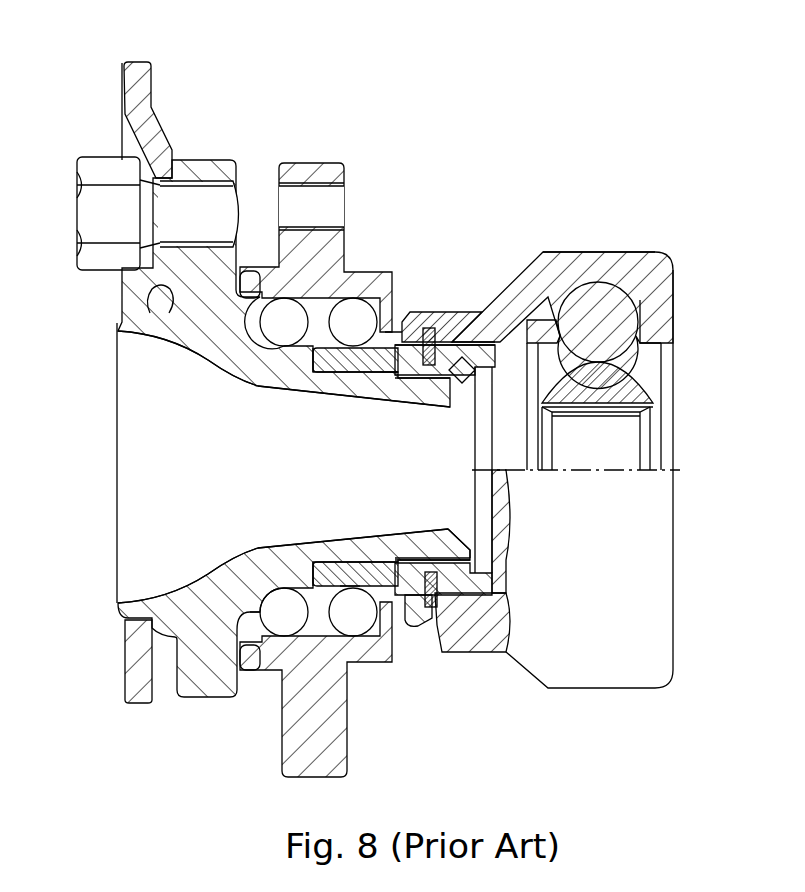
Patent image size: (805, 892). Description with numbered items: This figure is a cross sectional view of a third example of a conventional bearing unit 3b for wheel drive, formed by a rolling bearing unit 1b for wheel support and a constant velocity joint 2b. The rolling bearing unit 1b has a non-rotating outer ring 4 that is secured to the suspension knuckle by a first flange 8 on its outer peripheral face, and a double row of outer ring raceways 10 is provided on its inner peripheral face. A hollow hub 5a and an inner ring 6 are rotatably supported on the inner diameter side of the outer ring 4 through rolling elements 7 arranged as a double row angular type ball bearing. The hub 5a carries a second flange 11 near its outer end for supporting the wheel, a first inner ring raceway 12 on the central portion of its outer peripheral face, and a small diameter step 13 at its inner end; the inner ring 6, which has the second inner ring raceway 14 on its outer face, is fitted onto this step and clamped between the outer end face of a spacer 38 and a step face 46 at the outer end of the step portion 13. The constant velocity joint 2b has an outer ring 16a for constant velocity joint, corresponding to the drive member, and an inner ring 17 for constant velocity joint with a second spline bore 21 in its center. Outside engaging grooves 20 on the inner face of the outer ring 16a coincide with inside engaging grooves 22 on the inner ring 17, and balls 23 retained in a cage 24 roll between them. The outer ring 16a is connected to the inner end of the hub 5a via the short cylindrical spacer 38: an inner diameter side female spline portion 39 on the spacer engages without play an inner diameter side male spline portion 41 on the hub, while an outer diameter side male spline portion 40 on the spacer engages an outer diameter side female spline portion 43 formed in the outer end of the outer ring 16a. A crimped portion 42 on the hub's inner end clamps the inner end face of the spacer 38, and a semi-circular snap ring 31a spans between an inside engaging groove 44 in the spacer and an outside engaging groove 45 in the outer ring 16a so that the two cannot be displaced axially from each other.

The rolling bearing unit for wheel support 1b is at (372, 128).
The constant velocity joint 2b is at (616, 409).
The bearing unit for wheel drive 3b is at (378, 419).
The outer ring 4 is at (316, 235).
The hollow hub 5a is at (188, 338).
The inner ring 6 is at (338, 577).
The rolling elements 7 is at (284, 338).
The first flange 8 is at (300, 185).
The outer ring raceways 10 is at (268, 272).
The second flange 11 is at (198, 165).
The first inner ring raceway 12 is at (268, 560).
The small diameter step 13 is at (328, 375).
The second inner ring raceway 14 is at (352, 580).
The outer ring for constant velocity joint 16a is at (583, 267).
The inner ring for constant velocity joint 17 is at (627, 397).
The outside engaging grooves 20 is at (673, 298).
The second spline bore 21 is at (597, 407).
The inside engaging grooves 22 is at (640, 368).
The balls 23 is at (577, 303).
The cage 24 is at (673, 333).
The snap ring 31a is at (447, 327).
The spacer 38 is at (390, 372).
The inner diameter side female spline portion 39 is at (405, 555).
The outer diameter side male spline portion 40 is at (410, 622).
The inner diameter side male spline portion 41 is at (433, 572).
The crimped portion 42 is at (478, 382).
The outer diameter side female spline portion 43 is at (440, 648).
The inside engaging groove 44 is at (430, 378).
The outside engaging groove 45 is at (418, 327).
The step face 46 is at (325, 565).